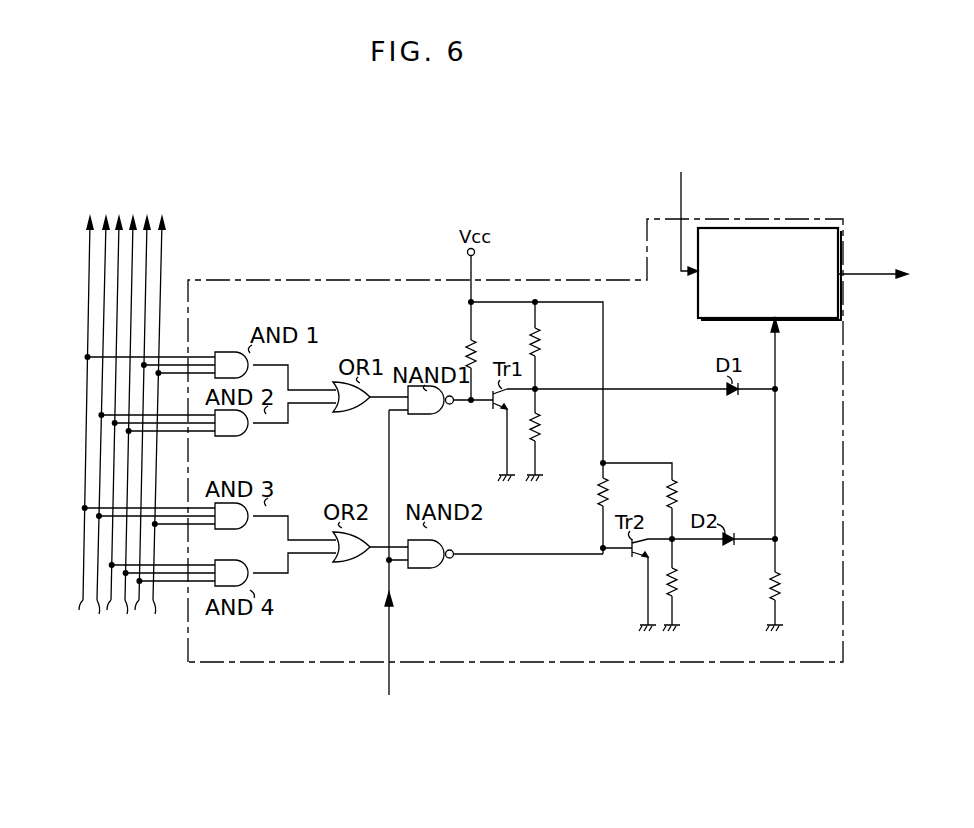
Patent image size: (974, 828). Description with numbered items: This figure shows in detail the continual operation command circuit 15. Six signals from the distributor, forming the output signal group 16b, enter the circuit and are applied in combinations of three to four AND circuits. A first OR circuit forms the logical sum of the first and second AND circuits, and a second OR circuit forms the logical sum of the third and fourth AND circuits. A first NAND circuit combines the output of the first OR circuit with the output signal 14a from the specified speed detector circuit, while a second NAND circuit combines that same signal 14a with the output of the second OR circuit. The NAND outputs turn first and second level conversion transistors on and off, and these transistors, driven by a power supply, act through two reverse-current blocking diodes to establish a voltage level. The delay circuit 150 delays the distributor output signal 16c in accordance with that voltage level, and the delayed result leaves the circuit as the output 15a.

The output signals 16b is at (169, 212).
The output signal 16c is at (688, 210).
The delay circuit 150 is at (695, 302).
The output line 15a is at (895, 275).
The continual operation command circuit 15 is at (840, 532).
The output signal 14a is at (393, 567).